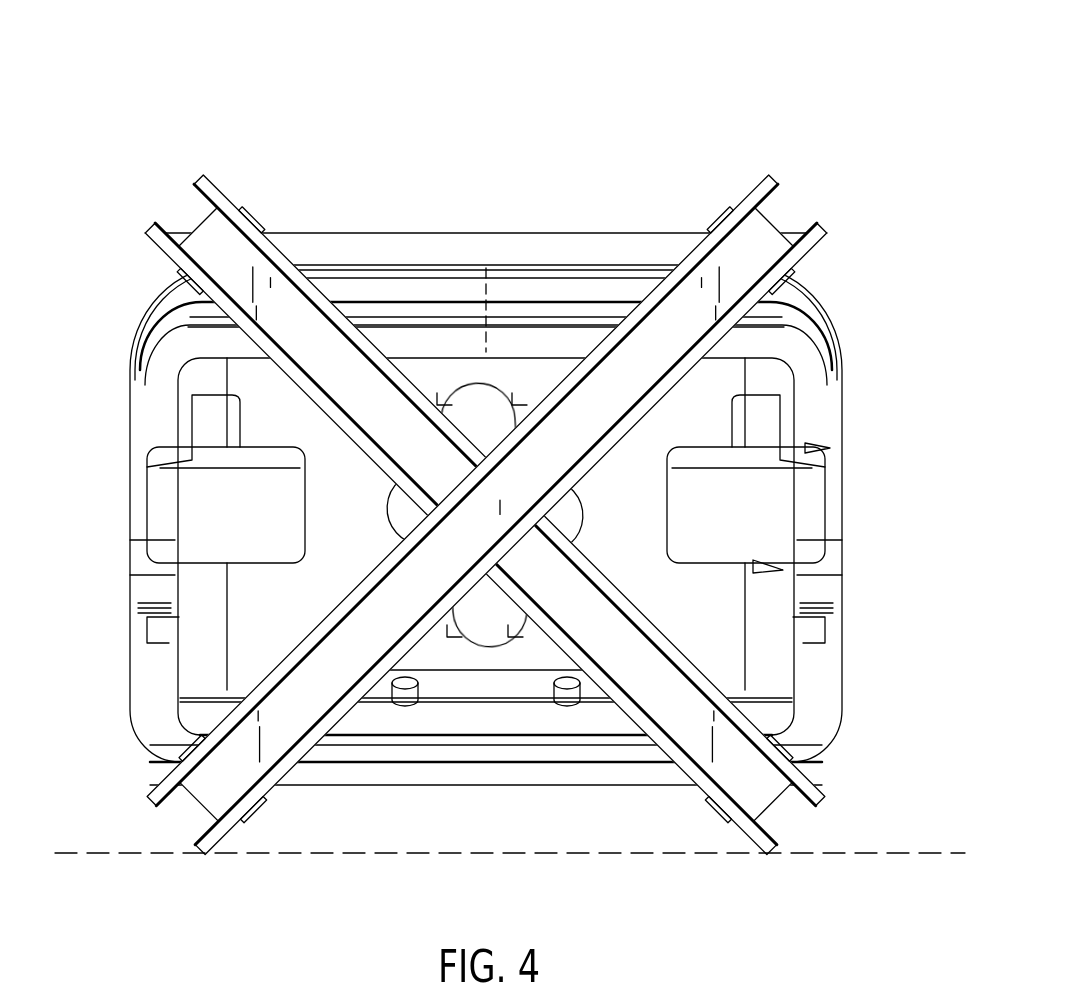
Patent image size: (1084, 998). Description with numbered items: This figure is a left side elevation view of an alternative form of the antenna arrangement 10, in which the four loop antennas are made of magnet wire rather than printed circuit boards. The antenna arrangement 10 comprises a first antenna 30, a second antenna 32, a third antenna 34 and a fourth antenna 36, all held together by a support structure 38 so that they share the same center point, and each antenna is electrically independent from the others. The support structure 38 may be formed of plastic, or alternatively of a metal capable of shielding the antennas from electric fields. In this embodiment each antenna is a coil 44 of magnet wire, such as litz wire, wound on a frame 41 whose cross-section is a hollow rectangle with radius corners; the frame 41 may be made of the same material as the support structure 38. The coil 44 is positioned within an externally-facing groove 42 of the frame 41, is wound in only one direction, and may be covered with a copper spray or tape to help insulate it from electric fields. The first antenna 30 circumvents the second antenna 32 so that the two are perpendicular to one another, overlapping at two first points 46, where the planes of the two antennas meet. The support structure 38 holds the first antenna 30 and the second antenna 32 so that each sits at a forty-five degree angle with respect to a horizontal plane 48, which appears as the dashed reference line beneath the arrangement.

The antenna arrangement 10 is at (502, 462).
The first antenna 30 is at (528, 483).
The second antenna 32 is at (487, 490).
The third antenna 34 is at (443, 513).
The fourth antenna 36 is at (422, 584).
The support structure 38 is at (486, 550).
The frame 41 is at (487, 561).
The externally-facing groove 42 is at (494, 513).
The coil 44 is at (486, 465).
The first points 46 is at (672, 497).
The horizontal plane 48 is at (510, 886).